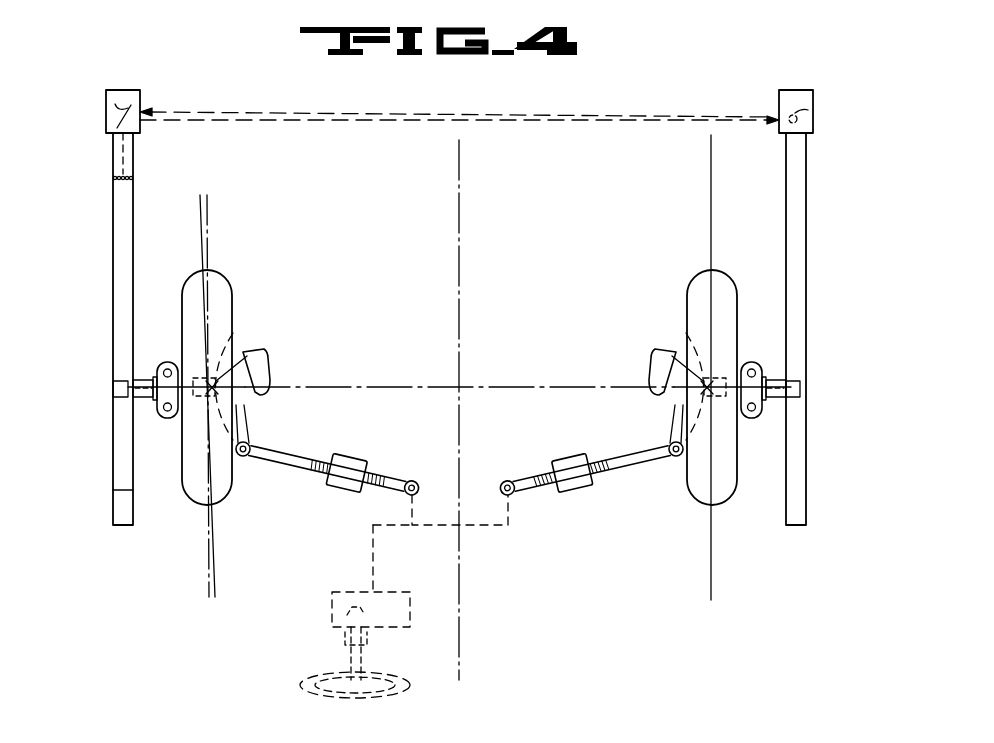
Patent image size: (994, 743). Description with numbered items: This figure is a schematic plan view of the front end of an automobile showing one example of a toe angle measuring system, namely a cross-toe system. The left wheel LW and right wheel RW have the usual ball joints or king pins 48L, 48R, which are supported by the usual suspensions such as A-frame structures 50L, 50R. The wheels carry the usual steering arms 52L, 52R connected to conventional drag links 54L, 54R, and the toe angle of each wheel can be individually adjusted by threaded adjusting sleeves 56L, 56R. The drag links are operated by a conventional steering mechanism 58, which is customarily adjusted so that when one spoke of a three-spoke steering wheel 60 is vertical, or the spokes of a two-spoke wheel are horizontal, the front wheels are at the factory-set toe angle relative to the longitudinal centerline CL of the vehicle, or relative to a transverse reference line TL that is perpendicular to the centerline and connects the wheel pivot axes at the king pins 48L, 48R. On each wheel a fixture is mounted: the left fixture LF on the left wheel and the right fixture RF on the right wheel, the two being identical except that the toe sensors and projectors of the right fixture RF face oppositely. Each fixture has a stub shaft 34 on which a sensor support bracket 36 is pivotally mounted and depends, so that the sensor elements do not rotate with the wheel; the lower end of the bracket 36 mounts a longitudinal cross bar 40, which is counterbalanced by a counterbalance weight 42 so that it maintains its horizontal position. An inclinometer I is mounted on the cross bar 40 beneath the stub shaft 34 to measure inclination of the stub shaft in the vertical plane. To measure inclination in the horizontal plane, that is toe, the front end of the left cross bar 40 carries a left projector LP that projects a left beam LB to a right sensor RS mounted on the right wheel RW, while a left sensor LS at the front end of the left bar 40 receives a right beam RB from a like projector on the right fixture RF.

The stub shaft 34 is at (152, 398).
The sensor support bracket 36 is at (147, 375).
The cross bar 40 is at (121, 225).
The counterbalance weight 42 is at (120, 504).
The left ball joint or king pin 48L is at (232, 344).
The right ball joint or king pin 48R is at (691, 333).
The left A-frame structure 50L is at (264, 353).
The right A-frame structure 50R is at (655, 358).
The left steering arm 52L is at (241, 418).
The right steering arm 52R is at (679, 427).
The left drag link 54L is at (369, 459).
The right drag link 54R is at (582, 444).
The left threaded adjusting sleeve 56L is at (359, 483).
The right threaded adjusting sleeve 56R is at (566, 484).
The steering mechanism 58 is at (366, 569).
The steering wheel 60 is at (342, 672).
The longitudinal centerline CL is at (461, 208).
The transverse reference line TL is at (357, 385).
The left wheel LW is at (222, 274).
The right wheel RW is at (687, 290).
The left fixture LF is at (93, 316).
The right fixture RF is at (816, 251).
The left sensor LS is at (104, 98).
The right sensor RS is at (816, 112).
The left projector LP is at (102, 178).
The left beam LB is at (303, 124).
The right beam RB is at (308, 111).
The inclinometer I is at (114, 387).